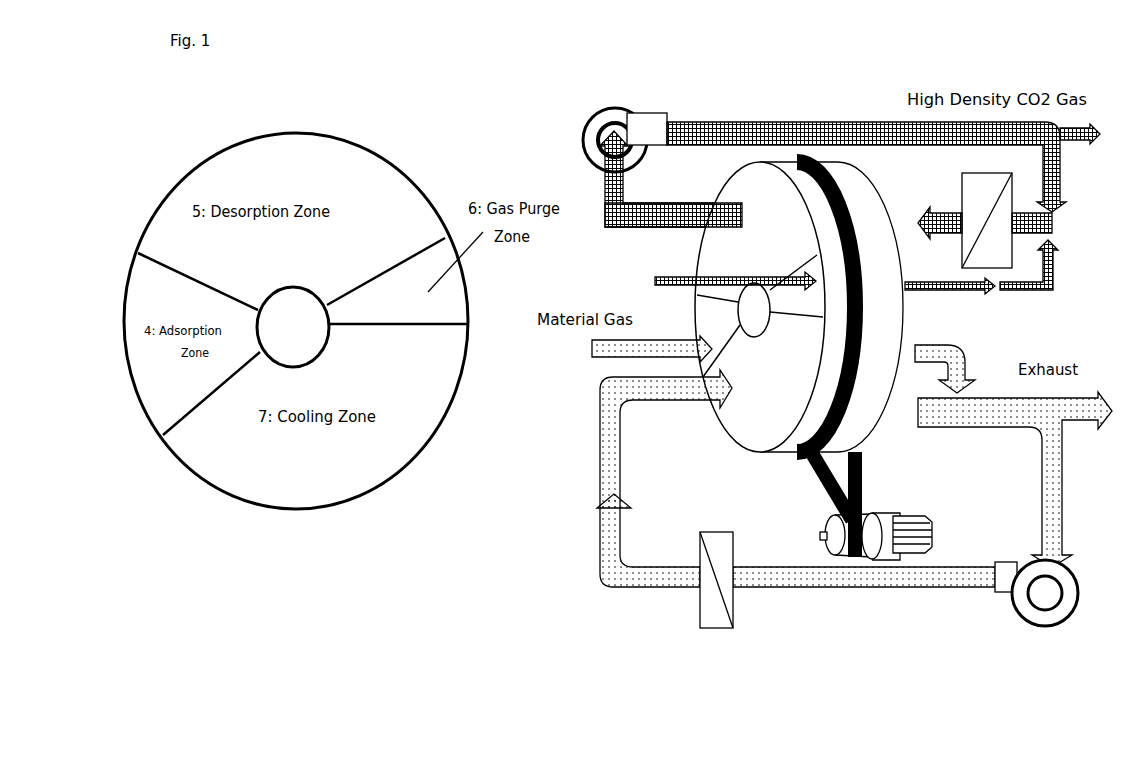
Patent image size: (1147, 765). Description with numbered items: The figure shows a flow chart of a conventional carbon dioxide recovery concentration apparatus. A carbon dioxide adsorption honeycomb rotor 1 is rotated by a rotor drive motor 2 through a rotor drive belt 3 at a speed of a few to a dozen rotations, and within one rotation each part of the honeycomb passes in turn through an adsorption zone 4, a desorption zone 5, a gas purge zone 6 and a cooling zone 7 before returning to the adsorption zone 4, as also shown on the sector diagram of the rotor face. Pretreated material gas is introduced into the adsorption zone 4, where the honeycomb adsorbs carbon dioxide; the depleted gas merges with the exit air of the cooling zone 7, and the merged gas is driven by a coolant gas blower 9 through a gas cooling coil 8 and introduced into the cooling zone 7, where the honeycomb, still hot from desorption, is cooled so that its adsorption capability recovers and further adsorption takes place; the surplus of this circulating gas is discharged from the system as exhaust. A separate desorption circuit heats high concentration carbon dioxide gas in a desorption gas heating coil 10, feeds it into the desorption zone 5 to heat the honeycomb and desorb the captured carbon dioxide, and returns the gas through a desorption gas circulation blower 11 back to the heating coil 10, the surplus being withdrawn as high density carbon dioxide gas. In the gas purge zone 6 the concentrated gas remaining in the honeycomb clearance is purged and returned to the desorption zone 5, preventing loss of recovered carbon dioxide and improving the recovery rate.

The carbon dioxide adsorption honeycomb rotor 1 is at (880, 418).
The rotor drive motor 2 is at (933, 540).
The rotor drive belt 3 is at (862, 463).
The adsorption zone 4 is at (712, 312).
The desorption zone 5 is at (747, 198).
The gas purge zone 6 is at (808, 293).
The cooling zone 7 is at (767, 415).
The gas cooling coil 8 is at (715, 532).
The coolant gas blower 9 is at (1068, 565).
The desorption gas heating coil 10 is at (962, 190).
The desorption gas circulation blower 11 is at (592, 180).